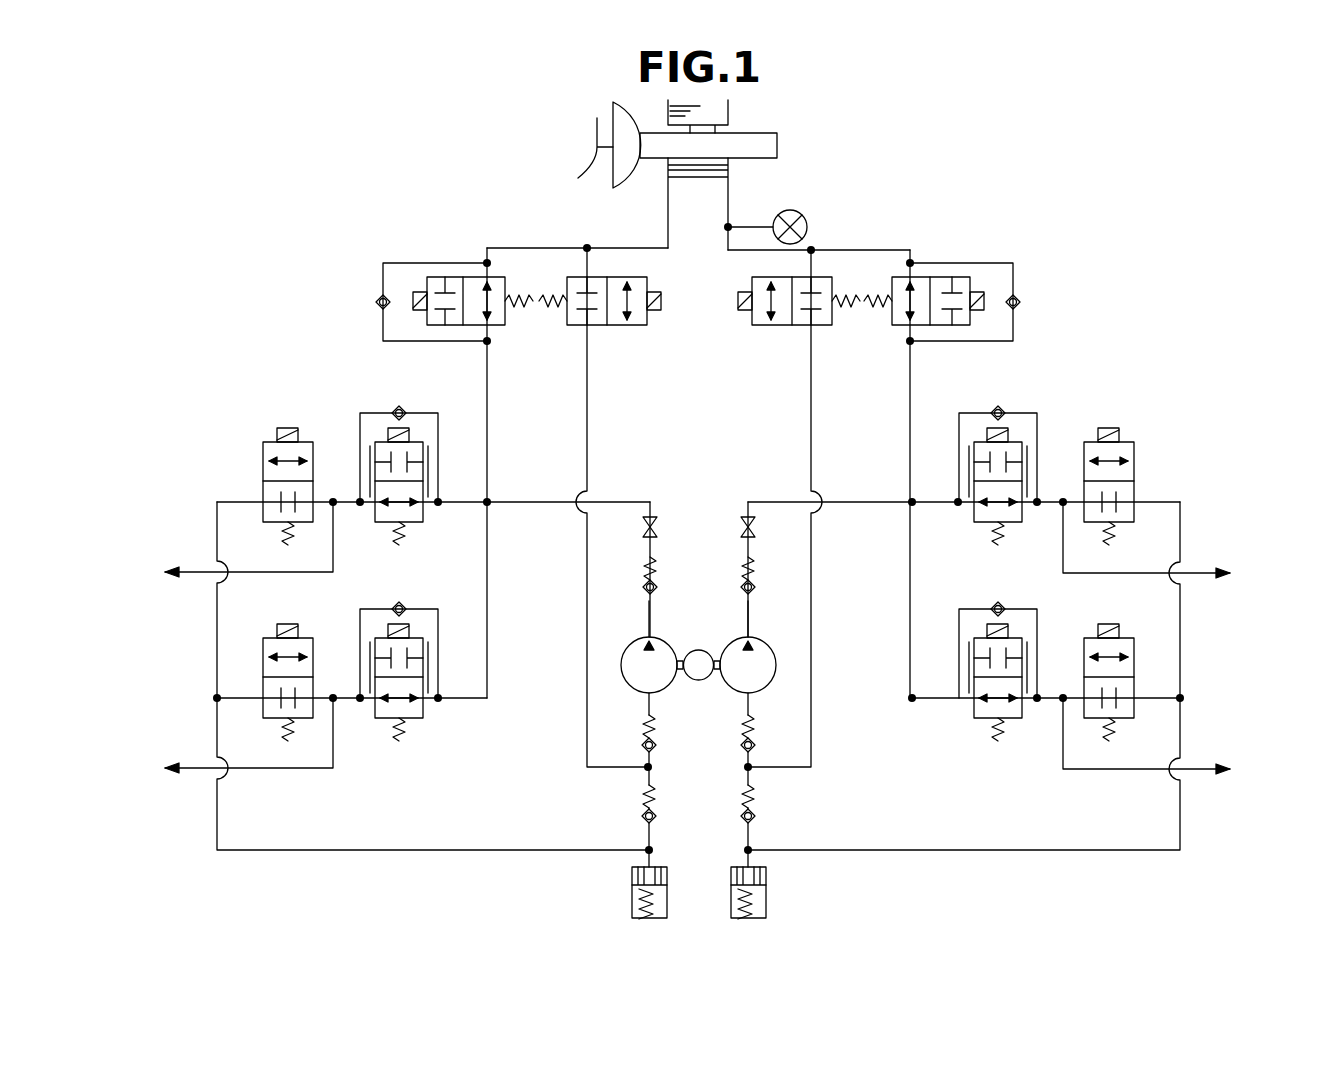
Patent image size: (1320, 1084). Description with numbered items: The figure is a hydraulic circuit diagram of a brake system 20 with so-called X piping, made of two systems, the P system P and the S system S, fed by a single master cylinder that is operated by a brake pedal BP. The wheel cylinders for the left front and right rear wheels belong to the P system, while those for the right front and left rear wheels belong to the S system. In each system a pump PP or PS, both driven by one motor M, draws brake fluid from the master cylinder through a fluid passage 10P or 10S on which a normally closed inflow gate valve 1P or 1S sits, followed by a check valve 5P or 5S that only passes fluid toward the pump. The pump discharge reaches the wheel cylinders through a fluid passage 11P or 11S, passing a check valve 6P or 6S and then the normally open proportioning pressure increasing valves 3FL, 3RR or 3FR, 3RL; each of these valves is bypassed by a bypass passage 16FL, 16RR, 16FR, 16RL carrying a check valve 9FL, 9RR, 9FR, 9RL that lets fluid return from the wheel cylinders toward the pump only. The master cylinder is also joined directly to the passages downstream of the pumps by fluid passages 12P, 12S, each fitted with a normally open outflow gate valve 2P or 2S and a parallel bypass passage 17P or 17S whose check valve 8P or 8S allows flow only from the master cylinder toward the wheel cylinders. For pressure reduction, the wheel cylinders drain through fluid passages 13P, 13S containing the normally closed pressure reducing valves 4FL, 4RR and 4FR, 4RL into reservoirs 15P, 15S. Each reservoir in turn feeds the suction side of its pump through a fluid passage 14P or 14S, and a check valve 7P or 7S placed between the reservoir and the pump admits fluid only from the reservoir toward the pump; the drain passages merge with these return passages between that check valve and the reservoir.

The brake system 20 is at (927, 150).
The brake pedal BP is at (577, 167).
The P system P is at (666, 212).
The S system S is at (730, 183).
The bypass passage 17P is at (404, 262).
The bypass passage 17S is at (993, 262).
The check valve 8P is at (376, 302).
The check valve 8S is at (1020, 302).
The inflow gate valve 1P is at (640, 328).
The inflow gate valve 1S is at (760, 328).
The outflow gate valve 2P is at (497, 328).
The outflow gate valve 2S is at (900, 328).
The fluid passage 10P is at (589, 428).
The fluid passage 10S is at (809, 428).
The fluid passage 11P is at (528, 506).
The fluid passage 11S is at (868, 506).
The fluid passage 12P is at (490, 428).
The fluid passage 12S is at (909, 428).
The fluid passage 13P is at (377, 848).
The fluid passage 13S is at (1012, 848).
The pressure increasing valve 3FL is at (372, 450).
The pressure increasing valve 3FR is at (1025, 450).
The pressure increasing valve 3RL is at (1025, 646).
The pressure increasing valve 3RR is at (372, 646).
The pressure reducing valve 4FL is at (268, 440).
The pressure reducing valve 4FR is at (1145, 423).
The pressure reducing valve 4RL is at (1145, 619).
The pressure reducing valve 4RR is at (268, 636).
The check valve 9FL is at (393, 408).
The check valve 9FR is at (1002, 408).
The check valve 9RL is at (1002, 608).
The check valve 9RR is at (393, 606).
The bypass passage 16FL is at (438, 412).
The bypass passage 16FR is at (958, 412).
The bypass passage 16RL is at (958, 608).
The bypass passage 16RR is at (438, 608).
The check valve 5P is at (647, 719).
The check valve 5S is at (750, 719).
The motor M is at (698, 665).
The pump PP is at (667, 637).
The pump PS is at (730, 637).
The check valve 6P is at (647, 567).
The check valve 6S is at (753, 567).
The check valve 7P is at (644, 800).
The check valve 7S is at (755, 800).
The fluid passage 14P is at (643, 832).
The fluid passage 14S is at (749, 832).
The reservoir 15P is at (630, 878).
The reservoir 15S is at (765, 878).